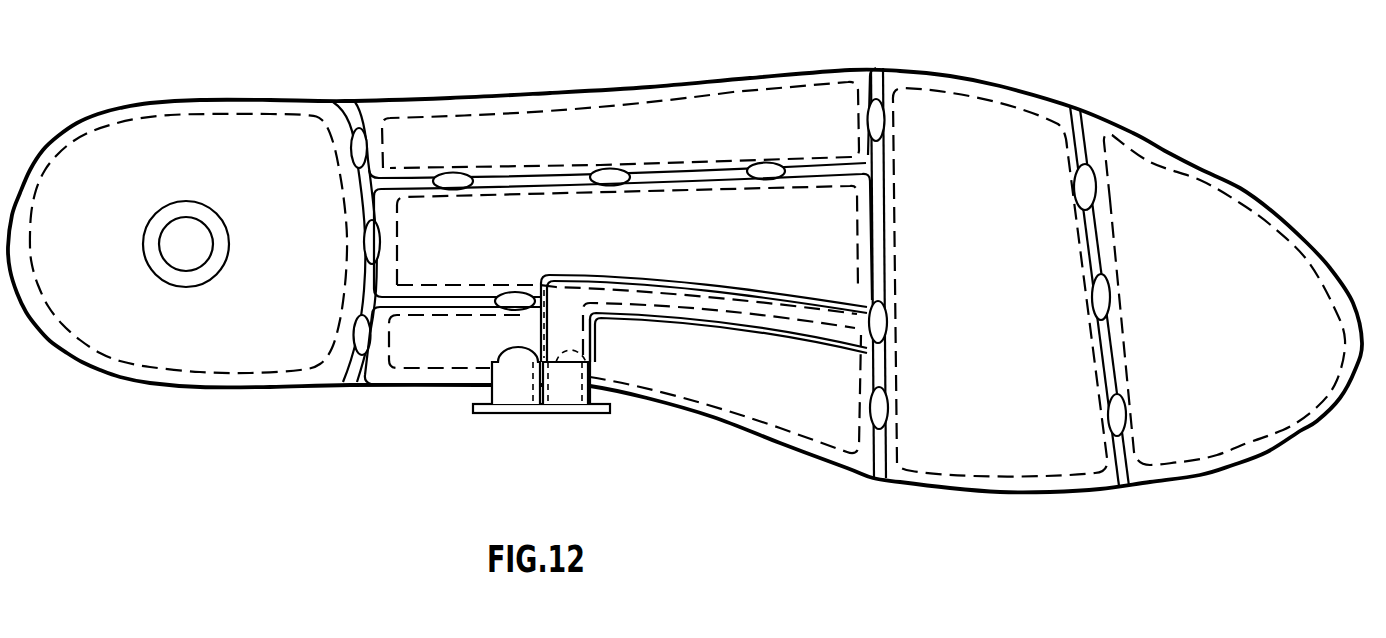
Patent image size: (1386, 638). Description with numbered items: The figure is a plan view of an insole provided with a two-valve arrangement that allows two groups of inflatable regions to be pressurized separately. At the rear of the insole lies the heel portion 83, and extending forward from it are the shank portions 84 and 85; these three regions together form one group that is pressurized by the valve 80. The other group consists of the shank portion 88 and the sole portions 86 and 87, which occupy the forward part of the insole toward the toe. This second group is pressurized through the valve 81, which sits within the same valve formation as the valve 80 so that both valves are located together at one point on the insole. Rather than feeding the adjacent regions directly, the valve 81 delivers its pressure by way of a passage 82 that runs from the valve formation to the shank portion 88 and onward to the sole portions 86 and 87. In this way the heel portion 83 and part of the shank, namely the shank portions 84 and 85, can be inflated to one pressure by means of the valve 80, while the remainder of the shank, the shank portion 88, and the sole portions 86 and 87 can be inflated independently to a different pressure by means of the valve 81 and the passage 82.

The valve 80 is at (518, 402).
The valve 81 is at (570, 404).
The passage 82 is at (702, 315).
The heel portion 83 is at (143, 107).
The shank portion 84 is at (665, 94).
The shank portion 85 is at (776, 249).
The sole portion 86 is at (993, 307).
The sole portion 87 is at (1226, 315).
The shank portion 88 is at (776, 390).